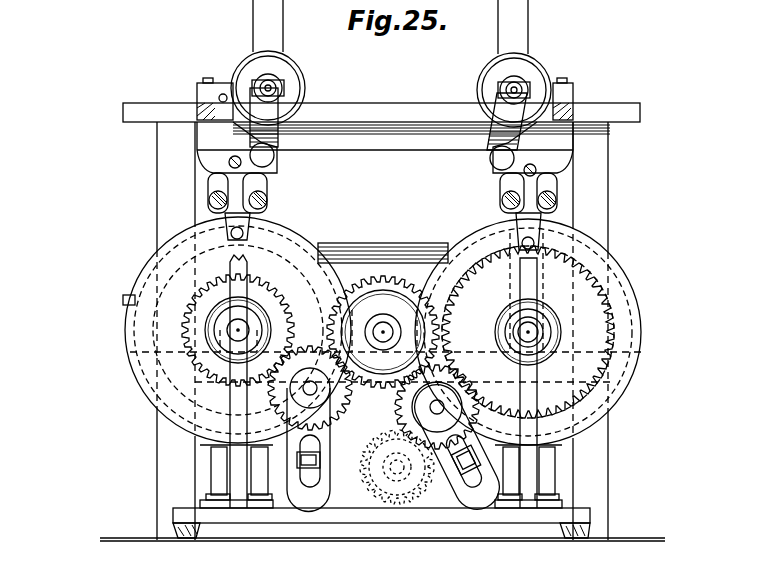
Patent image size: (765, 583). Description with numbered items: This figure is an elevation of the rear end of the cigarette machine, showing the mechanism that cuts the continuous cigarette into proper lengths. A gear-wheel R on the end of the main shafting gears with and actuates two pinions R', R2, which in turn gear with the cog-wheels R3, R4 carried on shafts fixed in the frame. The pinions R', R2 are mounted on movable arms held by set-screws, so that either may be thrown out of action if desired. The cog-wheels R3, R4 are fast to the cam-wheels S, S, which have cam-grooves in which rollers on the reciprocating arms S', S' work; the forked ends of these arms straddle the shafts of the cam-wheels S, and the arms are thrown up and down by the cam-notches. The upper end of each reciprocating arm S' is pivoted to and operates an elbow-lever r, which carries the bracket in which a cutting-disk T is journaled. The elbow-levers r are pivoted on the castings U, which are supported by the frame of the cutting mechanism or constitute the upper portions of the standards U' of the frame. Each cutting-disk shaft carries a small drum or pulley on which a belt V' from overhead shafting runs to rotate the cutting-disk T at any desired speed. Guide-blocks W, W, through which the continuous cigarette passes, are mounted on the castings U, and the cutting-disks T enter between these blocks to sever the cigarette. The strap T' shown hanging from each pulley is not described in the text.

The belt V' is at (408, 27).
The cutting-disk T is at (391, 89).
The pulley hanger strap T' is at (388, 125).
The guide-block W is at (198, 96).
The casting U is at (385, 149).
The elbow-lever r is at (266, 172).
The reciprocating arm S' is at (399, 224).
The cam-wheel S is at (391, 331).
The cog-wheel R3 is at (238, 330).
The gear-wheel R is at (383, 332).
The cog-wheel R4 is at (528, 332).
The pinion R' is at (316, 429).
The pinion R2 is at (412, 405).
The standard U' is at (383, 381).